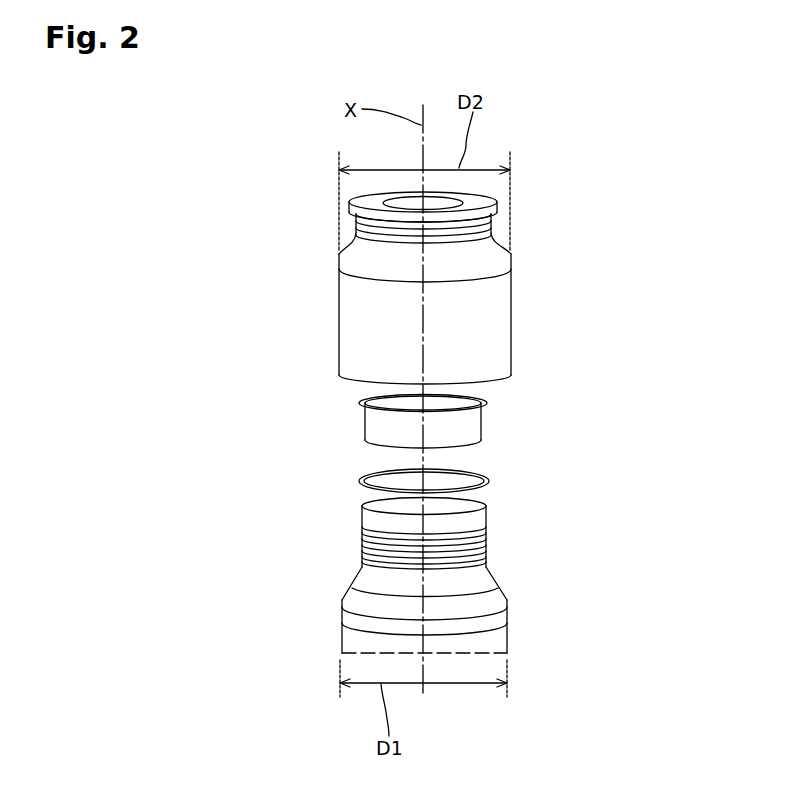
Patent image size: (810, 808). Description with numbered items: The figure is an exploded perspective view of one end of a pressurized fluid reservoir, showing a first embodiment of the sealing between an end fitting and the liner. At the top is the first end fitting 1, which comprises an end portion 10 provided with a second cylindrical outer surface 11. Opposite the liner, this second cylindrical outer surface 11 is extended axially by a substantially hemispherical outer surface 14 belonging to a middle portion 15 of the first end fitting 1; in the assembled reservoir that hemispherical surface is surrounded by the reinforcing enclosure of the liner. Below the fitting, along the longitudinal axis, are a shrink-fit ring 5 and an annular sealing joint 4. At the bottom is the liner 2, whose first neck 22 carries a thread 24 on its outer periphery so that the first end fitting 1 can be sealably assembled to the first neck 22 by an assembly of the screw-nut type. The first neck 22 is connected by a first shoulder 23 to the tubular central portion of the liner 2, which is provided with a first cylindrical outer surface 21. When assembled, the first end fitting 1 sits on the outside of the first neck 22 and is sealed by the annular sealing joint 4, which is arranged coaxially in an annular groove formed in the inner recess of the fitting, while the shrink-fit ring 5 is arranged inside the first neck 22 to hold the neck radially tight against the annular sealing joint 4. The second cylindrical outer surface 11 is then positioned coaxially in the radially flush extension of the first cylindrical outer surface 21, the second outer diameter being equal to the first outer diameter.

The first end fitting 1 is at (358, 360).
The end portion 10 is at (511, 268).
The second cylindrical outer surface 11 is at (339, 303).
The substantially hemispherical outer surface 14 is at (358, 260).
The middle portion 15 is at (492, 230).
The shrink-fit ring 5 is at (366, 433).
The annular sealing joint 4 is at (360, 482).
The liner 2 is at (370, 604).
The first neck 22 is at (365, 522).
The thread 24 is at (486, 530).
The first shoulder 23 is at (500, 597).
The first cylindrical outer surface 21 is at (508, 636).